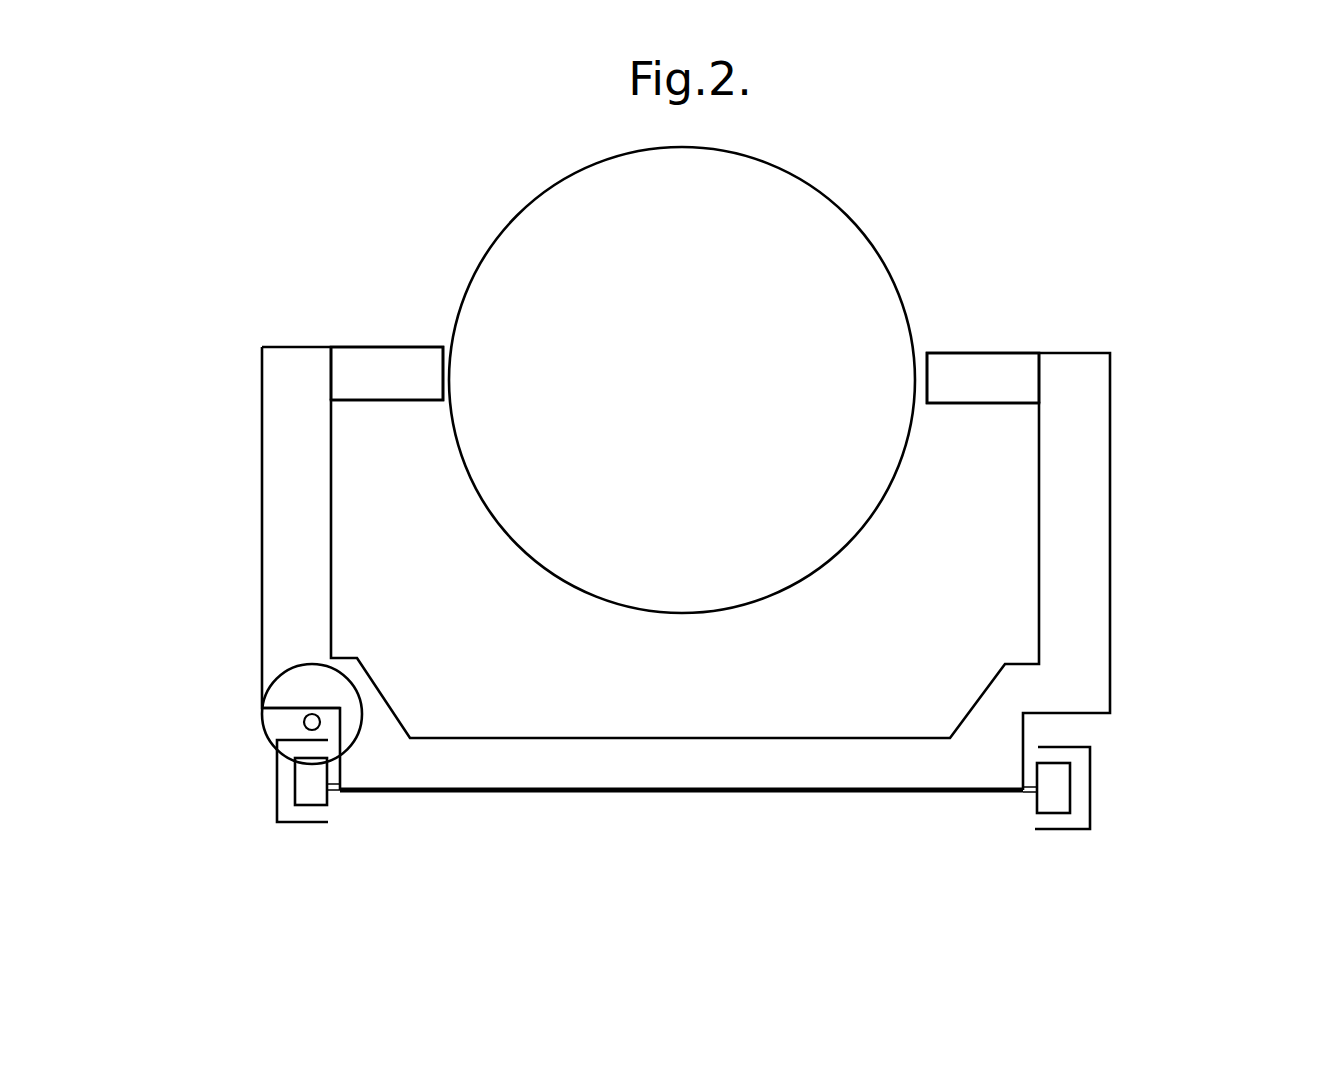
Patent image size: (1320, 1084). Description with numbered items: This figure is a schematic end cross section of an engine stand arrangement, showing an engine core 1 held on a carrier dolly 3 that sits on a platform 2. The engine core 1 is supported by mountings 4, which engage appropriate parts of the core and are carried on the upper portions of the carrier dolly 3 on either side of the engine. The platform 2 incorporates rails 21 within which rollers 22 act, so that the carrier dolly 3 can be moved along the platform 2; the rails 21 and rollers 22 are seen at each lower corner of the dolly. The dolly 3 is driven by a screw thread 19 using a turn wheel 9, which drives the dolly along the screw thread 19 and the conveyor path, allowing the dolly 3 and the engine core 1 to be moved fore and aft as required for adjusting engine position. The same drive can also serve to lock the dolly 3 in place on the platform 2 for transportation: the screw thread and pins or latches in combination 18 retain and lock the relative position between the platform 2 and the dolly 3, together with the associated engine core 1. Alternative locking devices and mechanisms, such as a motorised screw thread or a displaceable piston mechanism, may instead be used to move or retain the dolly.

The engine core 1 is at (816, 176).
The platform 2 is at (1108, 855).
The carrier dolly 3 is at (1148, 598).
The mountings 4 is at (302, 360).
The turn wheel 9 is at (290, 670).
The screw thread and pins or latches in combination 18 is at (256, 759).
The screw thread 19 is at (304, 722).
The rails 21 is at (275, 812).
The rollers 22 is at (307, 798).